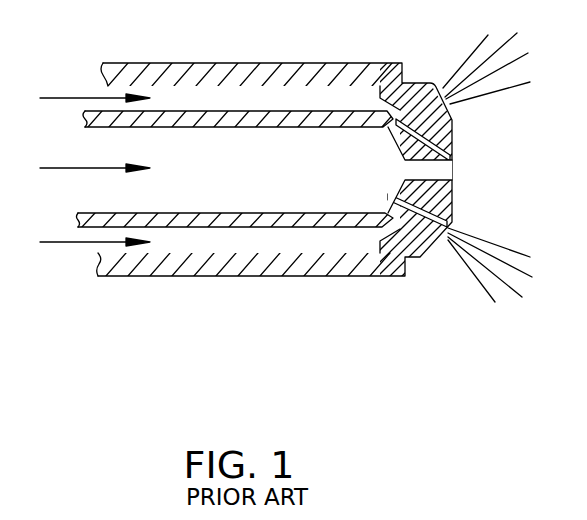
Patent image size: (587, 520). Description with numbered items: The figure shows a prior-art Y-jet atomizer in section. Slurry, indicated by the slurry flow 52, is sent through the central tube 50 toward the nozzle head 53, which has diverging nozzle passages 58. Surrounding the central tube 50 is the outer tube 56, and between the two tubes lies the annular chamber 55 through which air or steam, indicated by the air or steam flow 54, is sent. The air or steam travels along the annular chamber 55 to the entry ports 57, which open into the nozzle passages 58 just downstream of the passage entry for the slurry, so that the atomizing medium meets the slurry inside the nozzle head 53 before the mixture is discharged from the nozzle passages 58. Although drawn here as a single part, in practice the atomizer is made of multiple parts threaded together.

The central tube 50 is at (302, 117).
The slurry flow 52 is at (60, 168).
The nozzle head 53 is at (425, 115).
The air or steam flow 54 is at (65, 98).
The annular chamber 55 is at (238, 97).
The outer tube 56 is at (153, 72).
The entry ports 57 is at (395, 100).
The nozzle passages 58 is at (440, 187).